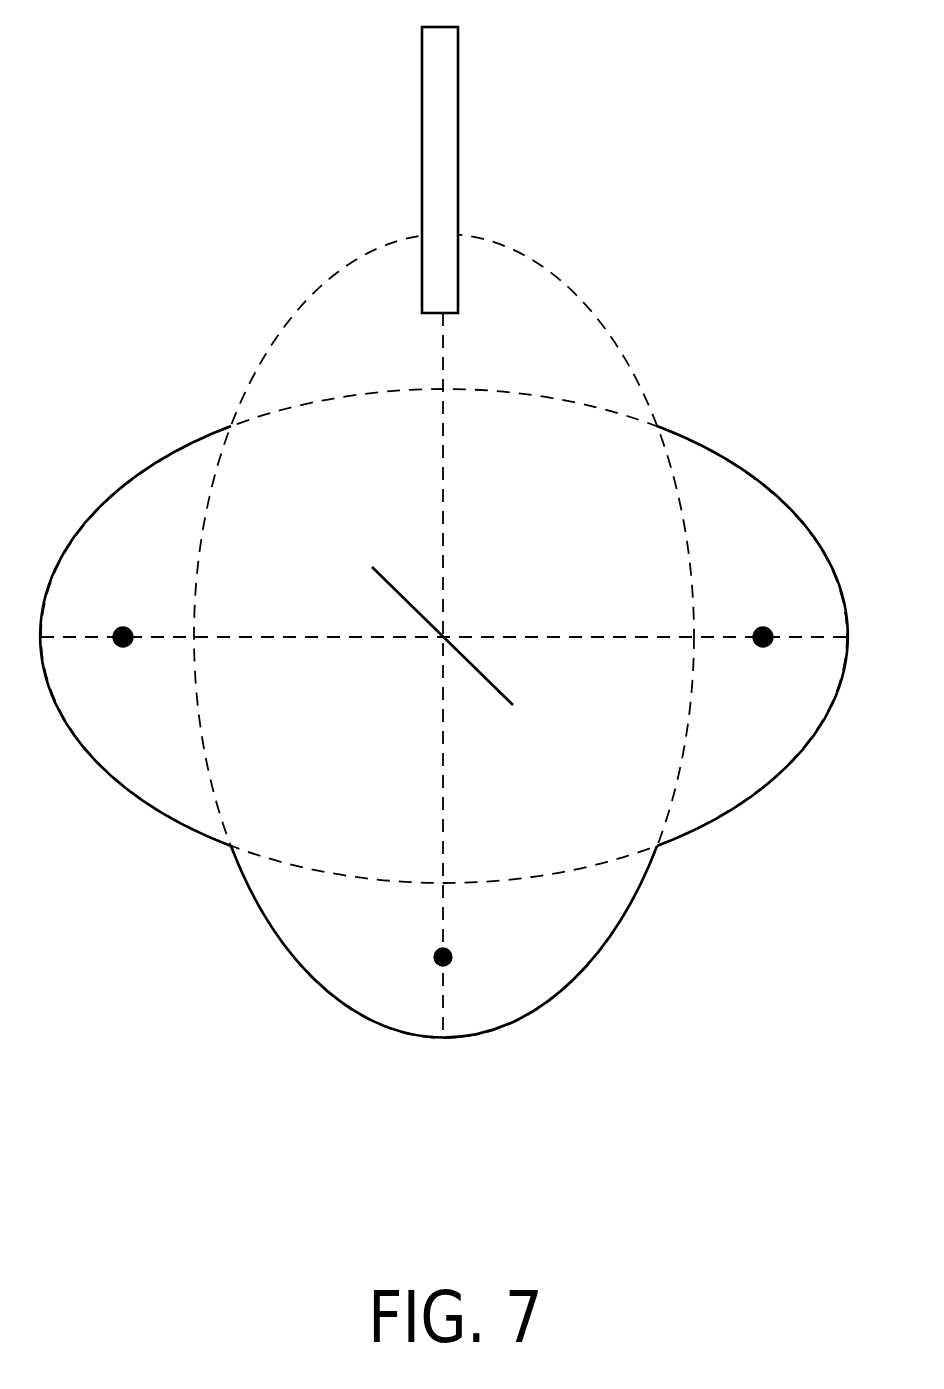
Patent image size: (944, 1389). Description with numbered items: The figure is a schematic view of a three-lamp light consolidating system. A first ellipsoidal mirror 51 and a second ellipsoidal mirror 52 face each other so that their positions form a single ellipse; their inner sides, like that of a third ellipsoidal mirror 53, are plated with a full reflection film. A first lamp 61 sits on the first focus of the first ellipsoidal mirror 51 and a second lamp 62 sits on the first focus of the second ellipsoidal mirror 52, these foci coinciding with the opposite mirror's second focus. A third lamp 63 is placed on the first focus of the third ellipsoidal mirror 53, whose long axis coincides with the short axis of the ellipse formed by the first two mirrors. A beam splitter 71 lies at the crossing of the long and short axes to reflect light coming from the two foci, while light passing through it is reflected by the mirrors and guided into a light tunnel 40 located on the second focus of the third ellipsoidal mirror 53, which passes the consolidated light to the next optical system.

The light tunnel 40 is at (422, 127).
The first ellipsoidal mirror 51 is at (140, 448).
The second ellipsoidal mirror 52 is at (750, 446).
The third ellipsoidal mirror 53 is at (626, 967).
The first lamp 61 is at (125, 627).
The second lamp 62 is at (762, 627).
The third lamp 63 is at (447, 965).
The beam splitter 71 is at (492, 684).